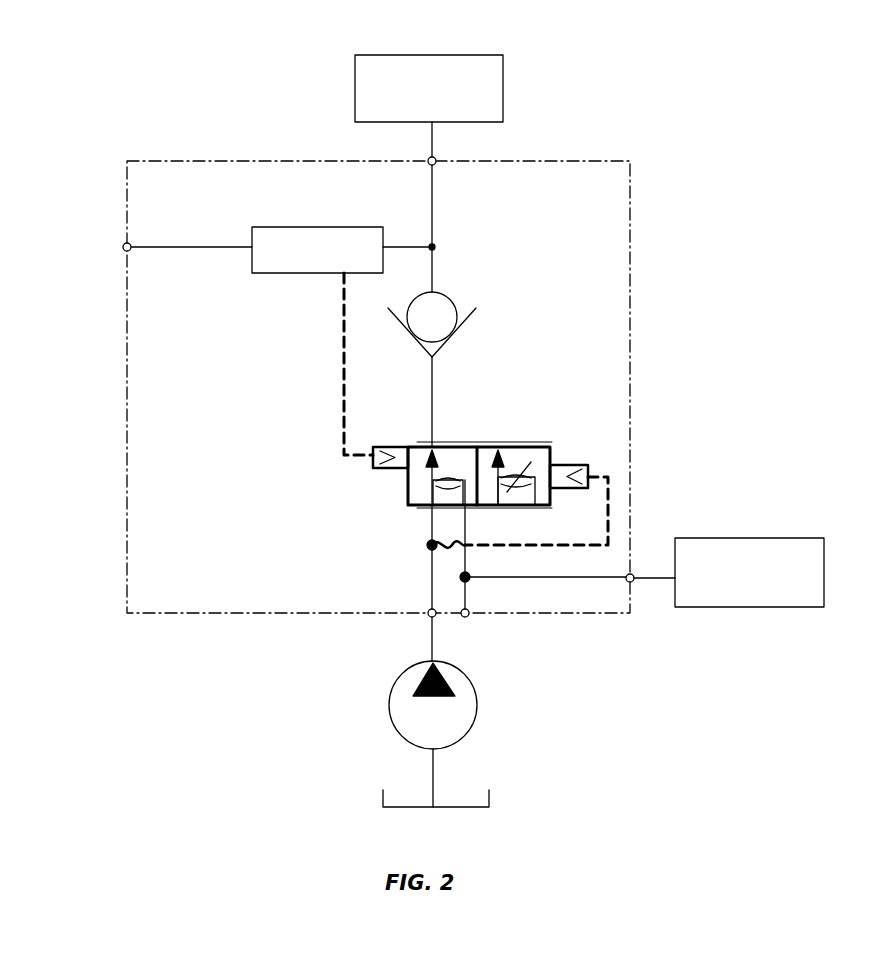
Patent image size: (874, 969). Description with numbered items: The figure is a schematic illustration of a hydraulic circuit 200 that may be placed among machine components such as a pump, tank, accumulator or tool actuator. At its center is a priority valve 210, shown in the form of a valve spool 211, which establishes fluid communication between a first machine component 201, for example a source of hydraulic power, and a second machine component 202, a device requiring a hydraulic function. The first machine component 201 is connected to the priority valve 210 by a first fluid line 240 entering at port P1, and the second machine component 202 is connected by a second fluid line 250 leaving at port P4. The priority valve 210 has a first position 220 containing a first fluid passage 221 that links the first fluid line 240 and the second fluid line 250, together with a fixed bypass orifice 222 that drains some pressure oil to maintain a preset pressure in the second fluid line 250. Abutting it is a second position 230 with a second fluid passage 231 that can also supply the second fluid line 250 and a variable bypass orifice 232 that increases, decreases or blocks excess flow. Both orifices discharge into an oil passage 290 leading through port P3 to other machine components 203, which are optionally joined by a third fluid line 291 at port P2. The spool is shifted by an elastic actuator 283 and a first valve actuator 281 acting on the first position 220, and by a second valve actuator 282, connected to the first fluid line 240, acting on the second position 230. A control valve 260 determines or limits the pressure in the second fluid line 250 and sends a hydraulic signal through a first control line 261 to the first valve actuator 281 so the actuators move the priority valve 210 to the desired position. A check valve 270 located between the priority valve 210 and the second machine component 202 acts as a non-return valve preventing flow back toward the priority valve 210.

The hydraulic circuit 200 is at (668, 210).
The first machine component 201 is at (477, 683).
The second machine component 202 is at (503, 88).
The machine components 203 is at (760, 538).
The priority valve 210 is at (552, 455).
The valve spool 211 is at (530, 445).
The first position 220 is at (410, 505).
The first fluid passage 221 is at (418, 447).
The fixed bypass orifice 222 is at (452, 478).
The second position 230 is at (552, 500).
The second fluid passage 231 is at (498, 480).
The variable bypass orifice 232 is at (520, 485).
The first fluid line 240 is at (432, 575).
The second fluid line 250 is at (432, 200).
The control valve 260 is at (272, 227).
The first control line 261 is at (344, 350).
The check valve 270 is at (450, 295).
The first valve actuator 281 is at (376, 448).
The second valve actuator 282 is at (590, 472).
The elastic actuator 283 is at (408, 486).
The oil passage 290 is at (466, 560).
The third fluid line 291 is at (655, 580).
The port P1 is at (410, 600).
The port P2 is at (609, 591).
The port P3 is at (488, 600).
The element P4 is at (449, 174).